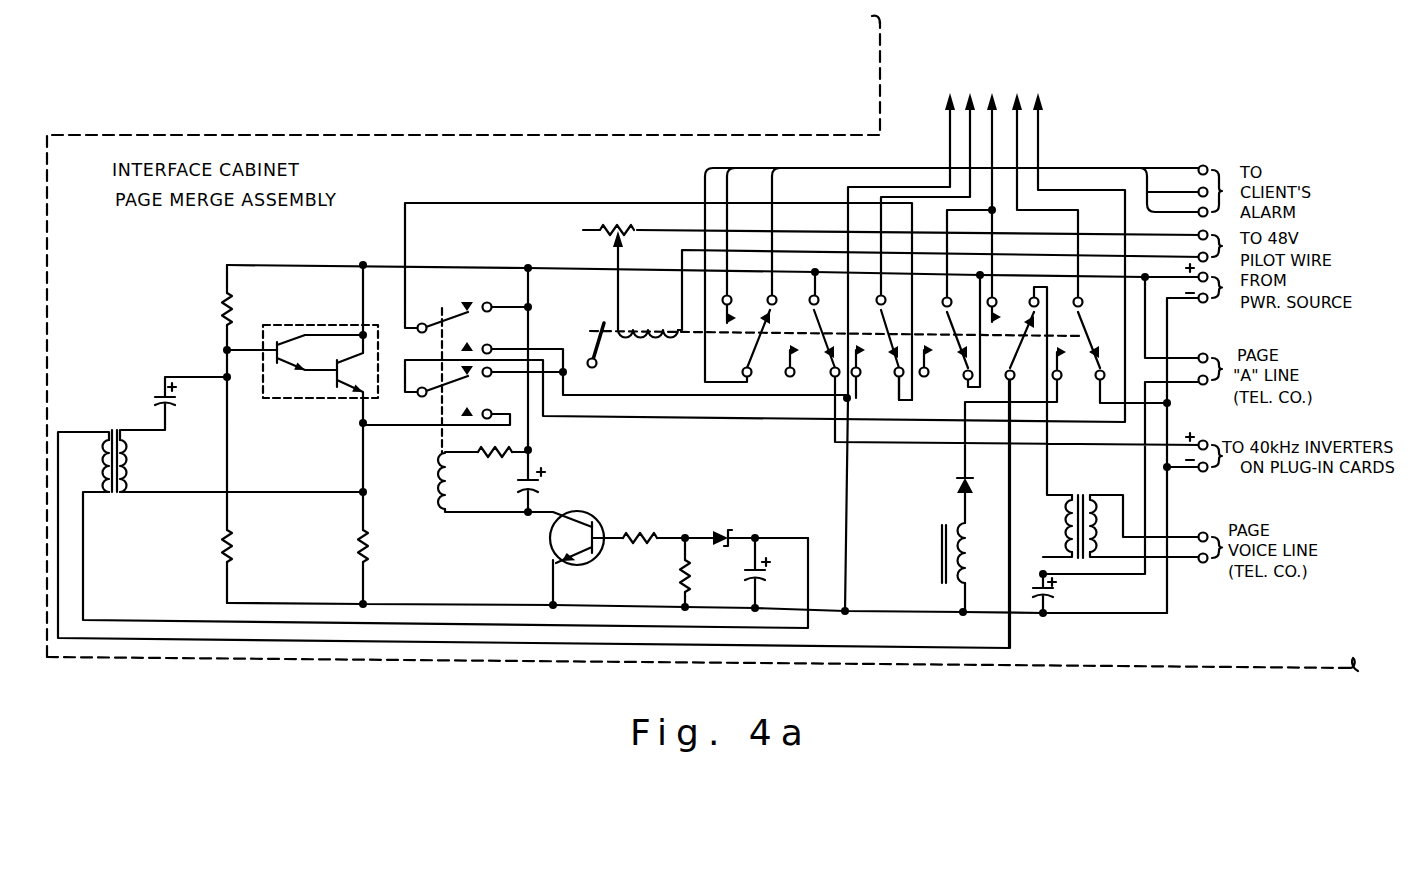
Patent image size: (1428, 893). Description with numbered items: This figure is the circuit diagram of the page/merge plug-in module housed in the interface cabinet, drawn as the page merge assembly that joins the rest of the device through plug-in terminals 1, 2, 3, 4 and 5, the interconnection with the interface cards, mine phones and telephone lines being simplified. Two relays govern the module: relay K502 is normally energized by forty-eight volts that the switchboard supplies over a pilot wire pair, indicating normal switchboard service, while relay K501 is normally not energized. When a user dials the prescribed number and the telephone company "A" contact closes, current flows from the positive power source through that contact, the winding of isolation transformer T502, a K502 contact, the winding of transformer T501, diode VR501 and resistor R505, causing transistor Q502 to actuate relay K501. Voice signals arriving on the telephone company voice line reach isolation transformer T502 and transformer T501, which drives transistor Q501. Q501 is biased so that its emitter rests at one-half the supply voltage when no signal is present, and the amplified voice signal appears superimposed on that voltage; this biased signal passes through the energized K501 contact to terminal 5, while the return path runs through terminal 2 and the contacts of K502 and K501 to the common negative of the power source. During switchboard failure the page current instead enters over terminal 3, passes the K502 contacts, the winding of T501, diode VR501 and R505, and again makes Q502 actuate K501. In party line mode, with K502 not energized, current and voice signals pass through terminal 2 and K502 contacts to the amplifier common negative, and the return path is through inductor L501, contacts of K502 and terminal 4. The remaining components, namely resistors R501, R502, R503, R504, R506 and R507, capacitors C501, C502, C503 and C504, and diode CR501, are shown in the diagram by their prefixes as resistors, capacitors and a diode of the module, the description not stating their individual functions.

The plug-in terminal 1 is at (951, 90).
The plug-in terminal 2 is at (971, 90).
The plug-in terminal 3 is at (993, 90).
The plug-in terminal 4 is at (1017, 90).
The plug-in terminal 5 is at (1039, 90).
The resistor R501 is at (197, 309).
The resistor R502 is at (254, 546).
The resistor R503 is at (340, 546).
The resistor R504 is at (492, 443).
The resistor R505 is at (643, 529).
The resistor R506 is at (658, 576).
The resistor R507 is at (611, 221).
The capacitor C501 is at (141, 391).
The capacitor C502 is at (555, 480).
The capacitor C503 is at (733, 573).
The capacitor C504 is at (1071, 592).
The transistor Q501 is at (320, 363).
The transistor Q502 is at (580, 530).
The transformer T501 is at (119, 451).
The isolation transformer T502 is at (1082, 516).
The relay K501 is at (450, 425).
The relay K502 is at (836, 300).
The inductor L501 is at (926, 553).
The diode CR501 is at (926, 488).
The diode VR501 is at (728, 528).